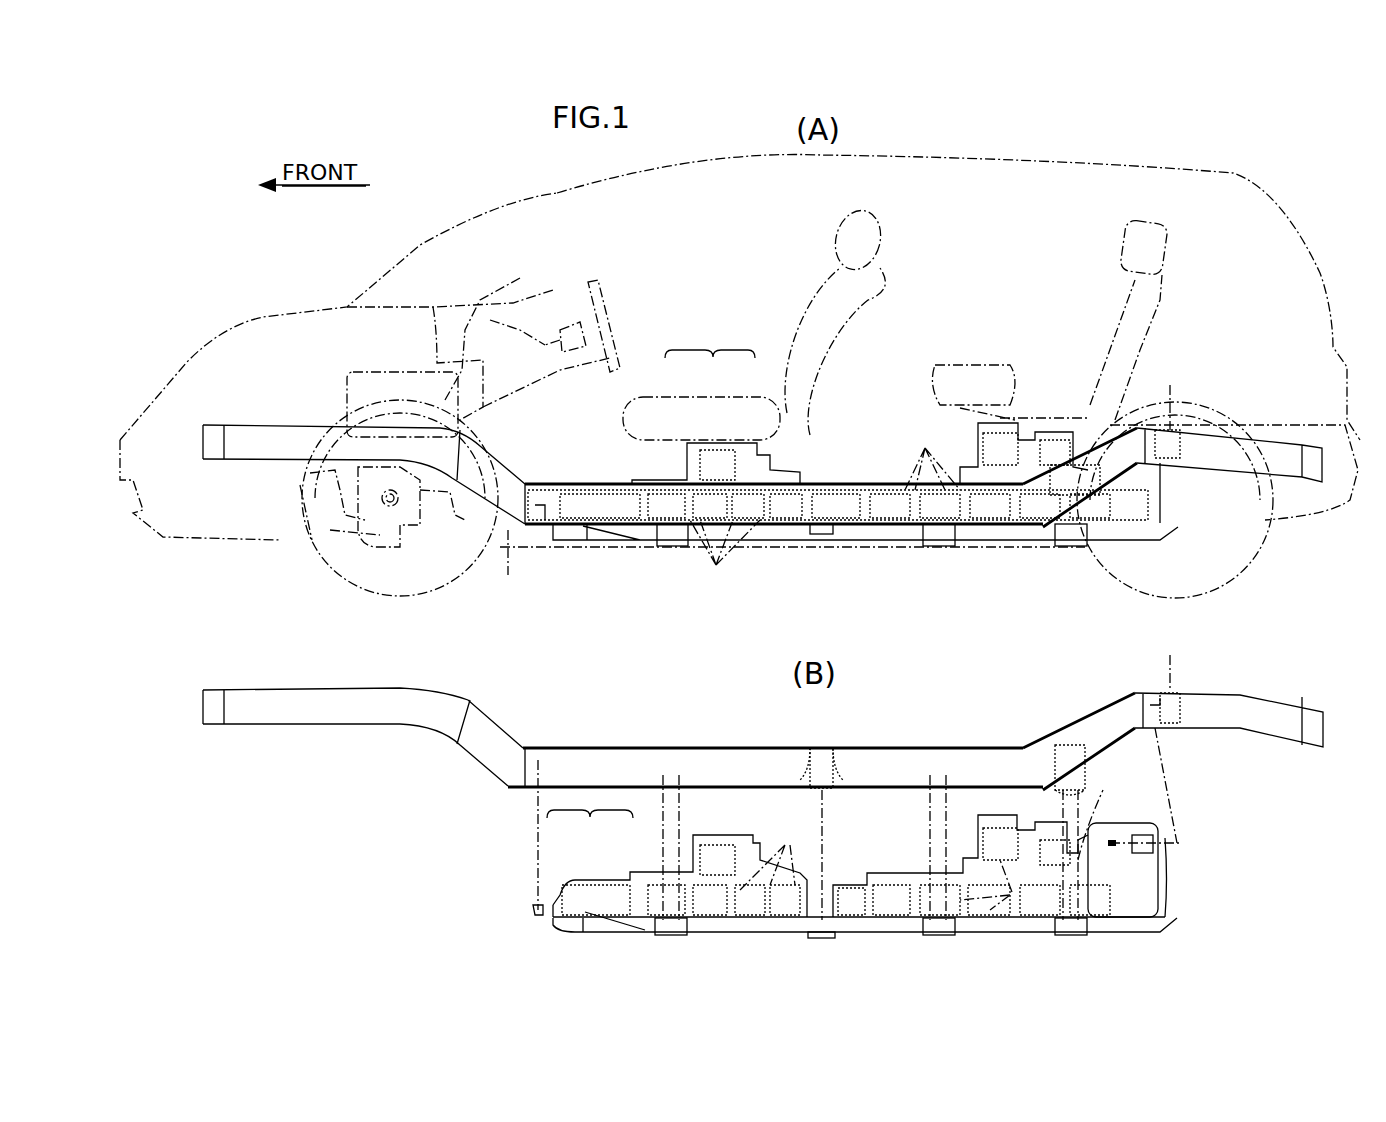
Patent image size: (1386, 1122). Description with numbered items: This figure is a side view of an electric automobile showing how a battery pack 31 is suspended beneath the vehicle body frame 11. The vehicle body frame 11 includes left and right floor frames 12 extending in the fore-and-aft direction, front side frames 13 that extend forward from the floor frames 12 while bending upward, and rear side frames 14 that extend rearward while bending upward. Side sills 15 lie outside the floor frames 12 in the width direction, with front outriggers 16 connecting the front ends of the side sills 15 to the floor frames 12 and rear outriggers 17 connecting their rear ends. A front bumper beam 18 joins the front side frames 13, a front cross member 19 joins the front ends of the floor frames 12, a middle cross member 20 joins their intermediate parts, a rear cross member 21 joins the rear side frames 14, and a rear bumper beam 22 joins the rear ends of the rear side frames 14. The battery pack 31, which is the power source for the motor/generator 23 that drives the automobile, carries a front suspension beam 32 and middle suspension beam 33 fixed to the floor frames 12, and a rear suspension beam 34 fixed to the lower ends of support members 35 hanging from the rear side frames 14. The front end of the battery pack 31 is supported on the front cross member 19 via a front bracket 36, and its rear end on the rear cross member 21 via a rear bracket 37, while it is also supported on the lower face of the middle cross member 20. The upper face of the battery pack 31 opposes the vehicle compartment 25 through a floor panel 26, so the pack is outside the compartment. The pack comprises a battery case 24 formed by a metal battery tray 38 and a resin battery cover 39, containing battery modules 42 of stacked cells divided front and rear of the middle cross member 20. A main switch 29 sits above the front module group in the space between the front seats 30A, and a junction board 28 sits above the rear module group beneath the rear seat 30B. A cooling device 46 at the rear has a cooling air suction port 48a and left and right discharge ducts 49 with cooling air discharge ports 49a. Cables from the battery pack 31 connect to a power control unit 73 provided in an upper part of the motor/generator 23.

The vehicle body frame 11 is at (822, 587).
The floor frame 12 is at (815, 500).
The front side frame 13 is at (290, 440).
The rear side frame 14 is at (1205, 440).
The side sill 15 is at (822, 609).
The front outrigger 16 is at (495, 482).
The rear outrigger 17 is at (1072, 460).
The front bumper beam 18 is at (212, 455).
The front cross member 19 is at (505, 812).
The middle cross member 20 is at (780, 540).
The rear cross member 21 is at (1169, 603).
The rear bumper beam 22 is at (1313, 480).
The motor/generator 23 is at (392, 433).
The battery case 24 is at (846, 626).
The vehicle compartment 25 is at (940, 338).
The floor panel 26 is at (1025, 400).
The junction board 28 is at (1045, 437).
The main switch 29 is at (720, 450).
The front seat 30A is at (830, 320).
The rear seat 30B is at (1105, 350).
The battery pack 31 is at (870, 544).
The front suspension beam 32 is at (672, 548).
The middle suspension beam 33 is at (940, 548).
The rear suspension beam 34 is at (1065, 548).
The support member 35 is at (1088, 515).
The front bracket 36 is at (545, 500).
The rear bracket 37 is at (1168, 475).
The battery tray 38 is at (752, 482).
The battery cover 39 is at (672, 482).
The battery module 42 is at (870, 667).
The cooling device 46 is at (1155, 825).
The cooling air suction port 48a is at (1105, 811).
The discharge duct 49 is at (1126, 826).
The cooling air discharge port 49a is at (1153, 850).
The power control unit 73 is at (460, 330).